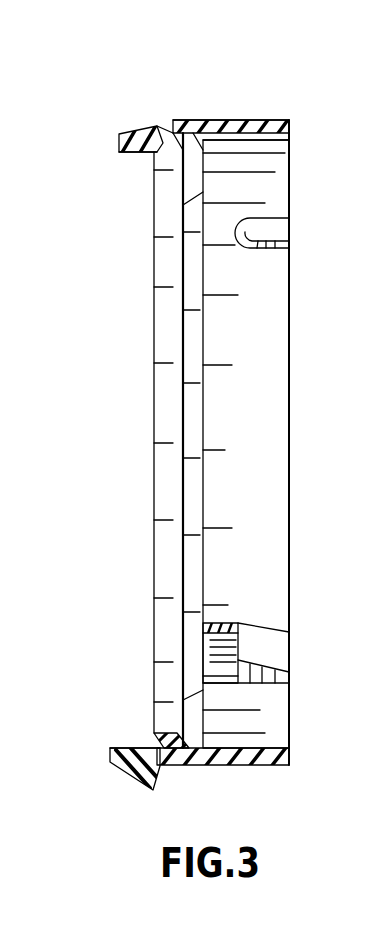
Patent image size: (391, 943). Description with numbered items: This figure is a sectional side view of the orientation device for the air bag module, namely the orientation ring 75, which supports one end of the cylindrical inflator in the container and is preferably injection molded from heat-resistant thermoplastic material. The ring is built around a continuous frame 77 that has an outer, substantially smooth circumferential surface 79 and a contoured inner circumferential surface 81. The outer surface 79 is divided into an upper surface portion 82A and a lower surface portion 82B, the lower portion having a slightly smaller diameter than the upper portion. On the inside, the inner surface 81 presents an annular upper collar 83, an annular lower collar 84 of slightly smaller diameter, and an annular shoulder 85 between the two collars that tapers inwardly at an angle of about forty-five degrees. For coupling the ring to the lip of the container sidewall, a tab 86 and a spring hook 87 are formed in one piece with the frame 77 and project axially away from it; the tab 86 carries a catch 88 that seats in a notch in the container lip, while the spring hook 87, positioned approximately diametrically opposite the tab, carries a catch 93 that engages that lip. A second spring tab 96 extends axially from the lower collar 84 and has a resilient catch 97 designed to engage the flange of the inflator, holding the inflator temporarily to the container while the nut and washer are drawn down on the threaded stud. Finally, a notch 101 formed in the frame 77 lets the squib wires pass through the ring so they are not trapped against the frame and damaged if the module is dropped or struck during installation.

The orientation ring 75 is at (243, 114).
The continuous frame 77 is at (283, 768).
The outer circumferential surface 79 is at (278, 118).
The inner circumferential surface 81 is at (243, 438).
The upper surface portion 82A is at (187, 120).
The lower surface portion 82B is at (164, 133).
The annular upper collar 83 is at (262, 132).
The annular lower collar 84 is at (158, 153).
The annular shoulder 85 is at (198, 182).
The tab 86 is at (127, 750).
The spring hook 87 is at (133, 135).
The catch 88 is at (163, 782).
The catch 93 is at (153, 127).
The spring tab 96 is at (233, 668).
The resilient catch 97 is at (247, 645).
The notch 101 is at (270, 238).